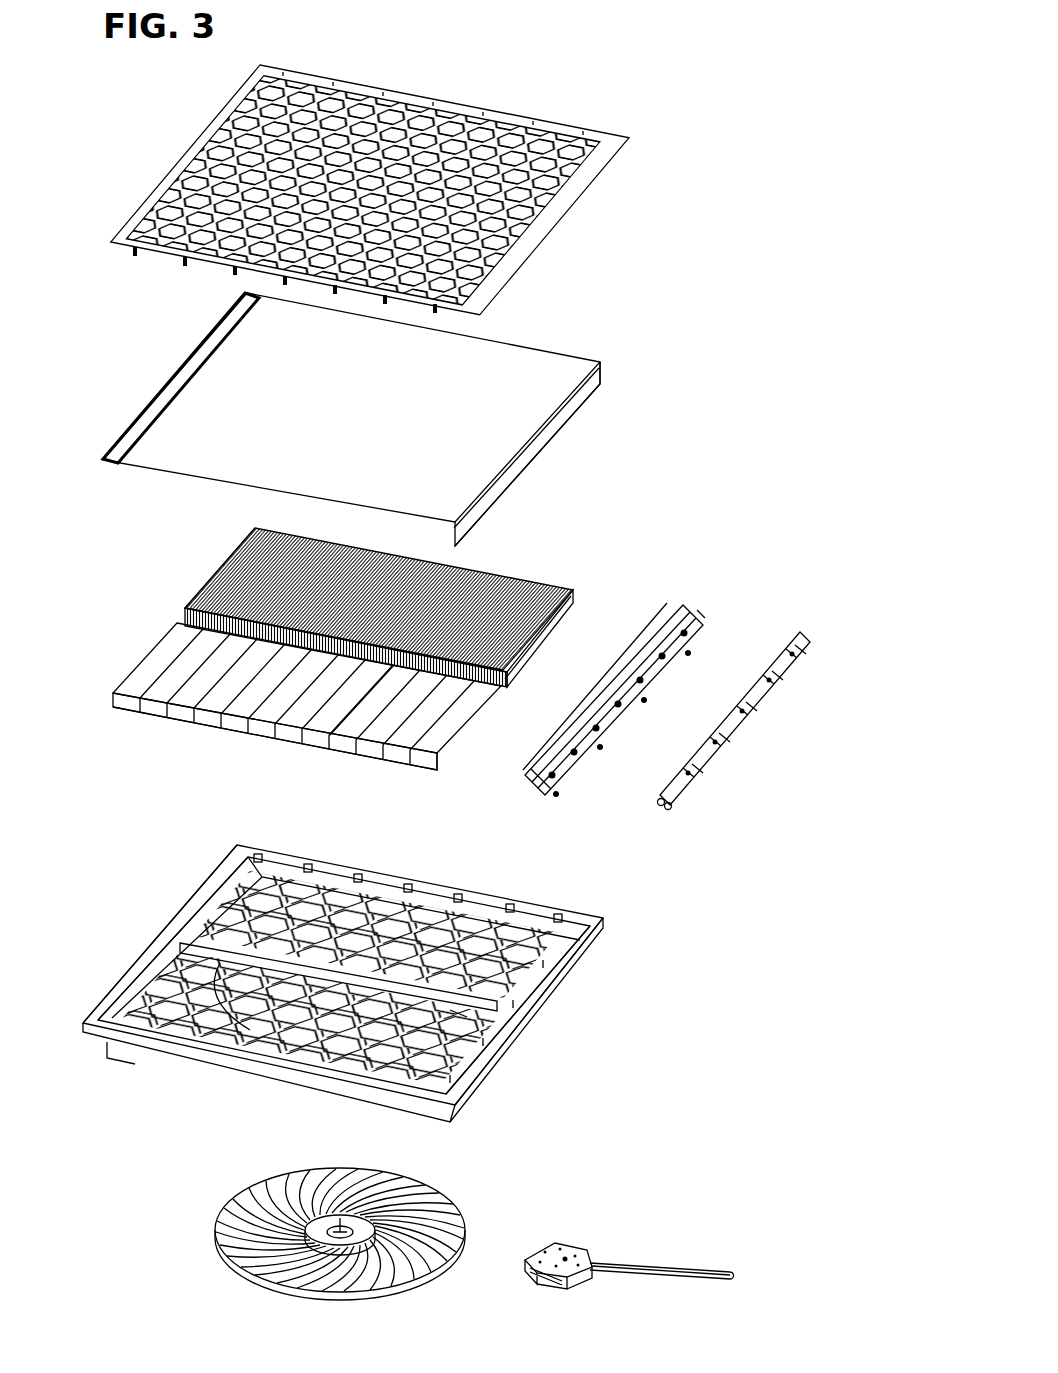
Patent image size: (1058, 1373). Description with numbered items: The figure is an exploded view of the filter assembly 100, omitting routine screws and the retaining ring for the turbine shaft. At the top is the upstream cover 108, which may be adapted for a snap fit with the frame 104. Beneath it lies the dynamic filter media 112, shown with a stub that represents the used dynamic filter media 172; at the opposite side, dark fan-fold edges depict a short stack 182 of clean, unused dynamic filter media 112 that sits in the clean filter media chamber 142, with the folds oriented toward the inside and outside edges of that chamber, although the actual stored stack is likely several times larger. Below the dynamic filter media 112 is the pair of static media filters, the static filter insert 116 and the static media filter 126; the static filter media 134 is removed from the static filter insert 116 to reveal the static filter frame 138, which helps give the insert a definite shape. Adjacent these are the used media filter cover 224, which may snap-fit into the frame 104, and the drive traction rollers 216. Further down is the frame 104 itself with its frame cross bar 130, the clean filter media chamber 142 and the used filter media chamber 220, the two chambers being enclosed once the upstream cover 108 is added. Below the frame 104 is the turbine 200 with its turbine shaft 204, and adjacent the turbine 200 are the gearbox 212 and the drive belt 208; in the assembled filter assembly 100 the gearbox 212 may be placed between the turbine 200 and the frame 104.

The filter assembly 100 is at (163, 86).
The frame 104 is at (227, 1057).
The upstream cover 108 is at (560, 207).
The dynamic filter media 112 is at (358, 411).
The static filter insert 116 is at (312, 717).
The static media filter 126 is at (480, 598).
The frame cross bar 130 is at (450, 997).
The static filter media 134 is at (245, 590).
The static filter frame 138 is at (415, 760).
The clean filter media chamber 142 is at (217, 882).
The used dynamic filter media 172 is at (596, 381).
The short stack 182 is at (113, 462).
The turbine 200 is at (235, 1258).
The turbine shaft 204 is at (347, 1222).
The drive belt 208 is at (680, 1272).
The gearbox 212 is at (568, 1245).
The drive traction rollers 216 is at (683, 793).
The used filter media chamber 220 is at (573, 937).
The used media filter cover 224 is at (670, 607).